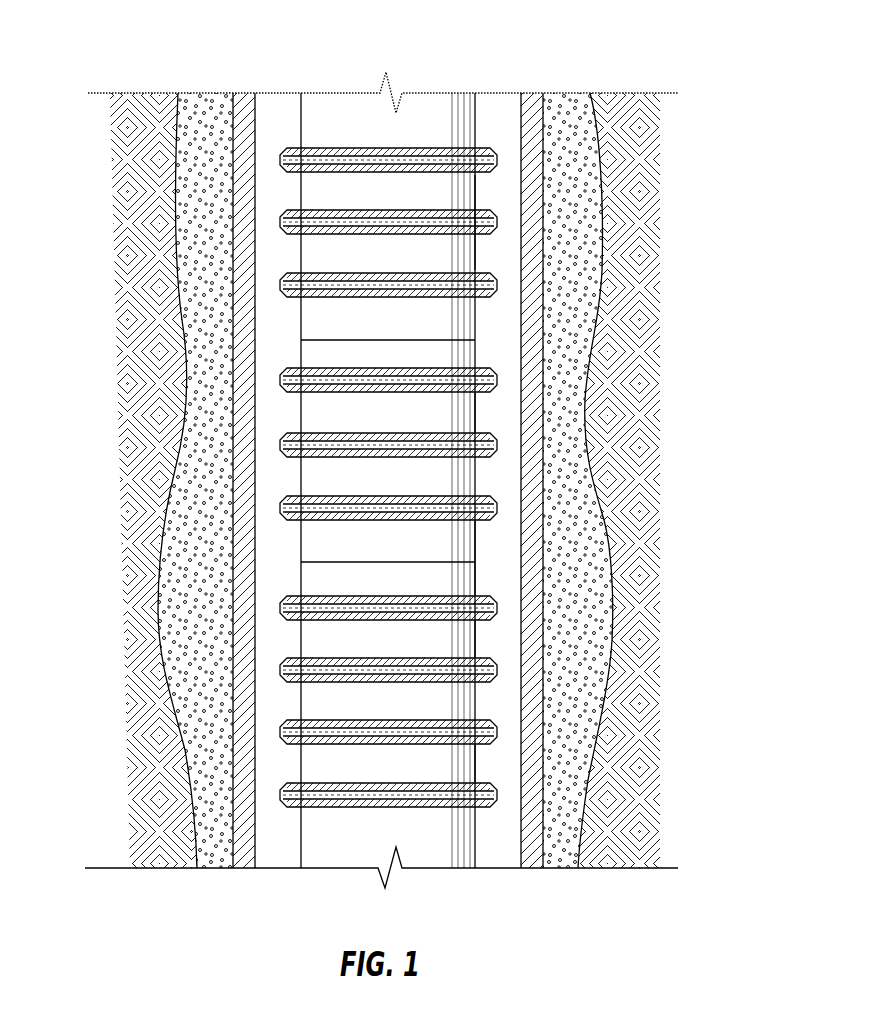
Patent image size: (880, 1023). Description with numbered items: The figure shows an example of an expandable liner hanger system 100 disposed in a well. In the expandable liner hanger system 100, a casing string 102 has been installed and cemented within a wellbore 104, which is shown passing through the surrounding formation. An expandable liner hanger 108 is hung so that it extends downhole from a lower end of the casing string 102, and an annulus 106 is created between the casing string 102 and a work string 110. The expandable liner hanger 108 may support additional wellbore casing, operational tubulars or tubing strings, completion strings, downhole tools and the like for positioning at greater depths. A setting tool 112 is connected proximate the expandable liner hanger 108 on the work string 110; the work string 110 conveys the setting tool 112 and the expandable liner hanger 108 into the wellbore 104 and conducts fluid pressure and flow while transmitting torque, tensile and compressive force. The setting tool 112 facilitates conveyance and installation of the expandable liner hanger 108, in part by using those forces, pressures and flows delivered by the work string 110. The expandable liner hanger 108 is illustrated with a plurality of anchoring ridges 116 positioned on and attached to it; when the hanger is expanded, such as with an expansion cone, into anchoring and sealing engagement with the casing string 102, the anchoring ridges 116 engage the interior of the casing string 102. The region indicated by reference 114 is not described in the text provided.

The expandable liner hanger system 100 is at (661, 49).
The casing string 102 is at (233, 300).
The wellbore 104 is at (190, 348).
The annulus 106 is at (280, 540).
The expandable liner hanger 108 is at (495, 577).
The work string 110 is at (498, 248).
The setting tool 112 is at (498, 410).
The annulus zones 114 is at (498, 764).
The anchoring ridges 116 is at (280, 607).